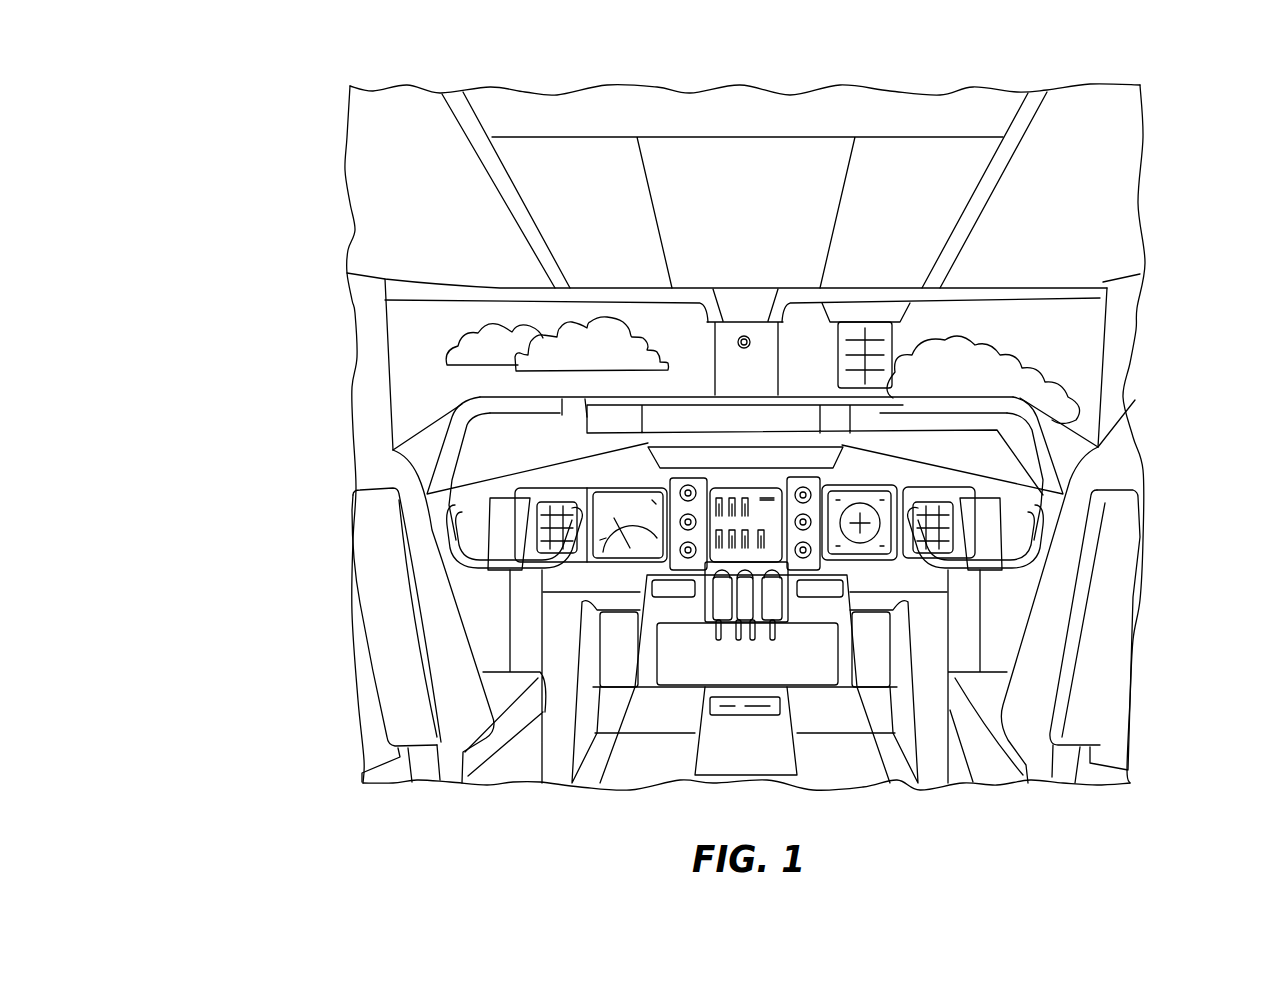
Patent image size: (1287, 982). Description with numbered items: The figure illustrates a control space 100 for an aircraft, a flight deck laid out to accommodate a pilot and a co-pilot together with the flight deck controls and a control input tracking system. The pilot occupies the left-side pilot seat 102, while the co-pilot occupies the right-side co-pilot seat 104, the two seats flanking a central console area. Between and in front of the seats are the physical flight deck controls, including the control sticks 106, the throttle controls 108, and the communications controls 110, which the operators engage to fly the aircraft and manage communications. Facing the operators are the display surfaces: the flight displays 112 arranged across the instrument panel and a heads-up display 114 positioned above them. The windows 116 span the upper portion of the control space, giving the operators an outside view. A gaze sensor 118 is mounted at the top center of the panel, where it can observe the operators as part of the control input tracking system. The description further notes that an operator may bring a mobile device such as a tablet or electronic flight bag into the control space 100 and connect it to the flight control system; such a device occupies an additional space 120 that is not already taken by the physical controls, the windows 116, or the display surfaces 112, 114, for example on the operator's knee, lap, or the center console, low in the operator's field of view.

The control space 100 is at (275, 100).
The pilot seat 102 is at (452, 675).
The co-pilot seat 104 is at (1072, 708).
The control sticks 106 is at (510, 537).
The throttle controls 108 is at (770, 598).
The communications controls 110 is at (768, 512).
The flight displays 112 is at (633, 525).
The heads-up display 114 is at (885, 342).
The windows 116 is at (457, 375).
The gaze sensor 118 is at (750, 340).
The additional space 120 is at (1000, 655).